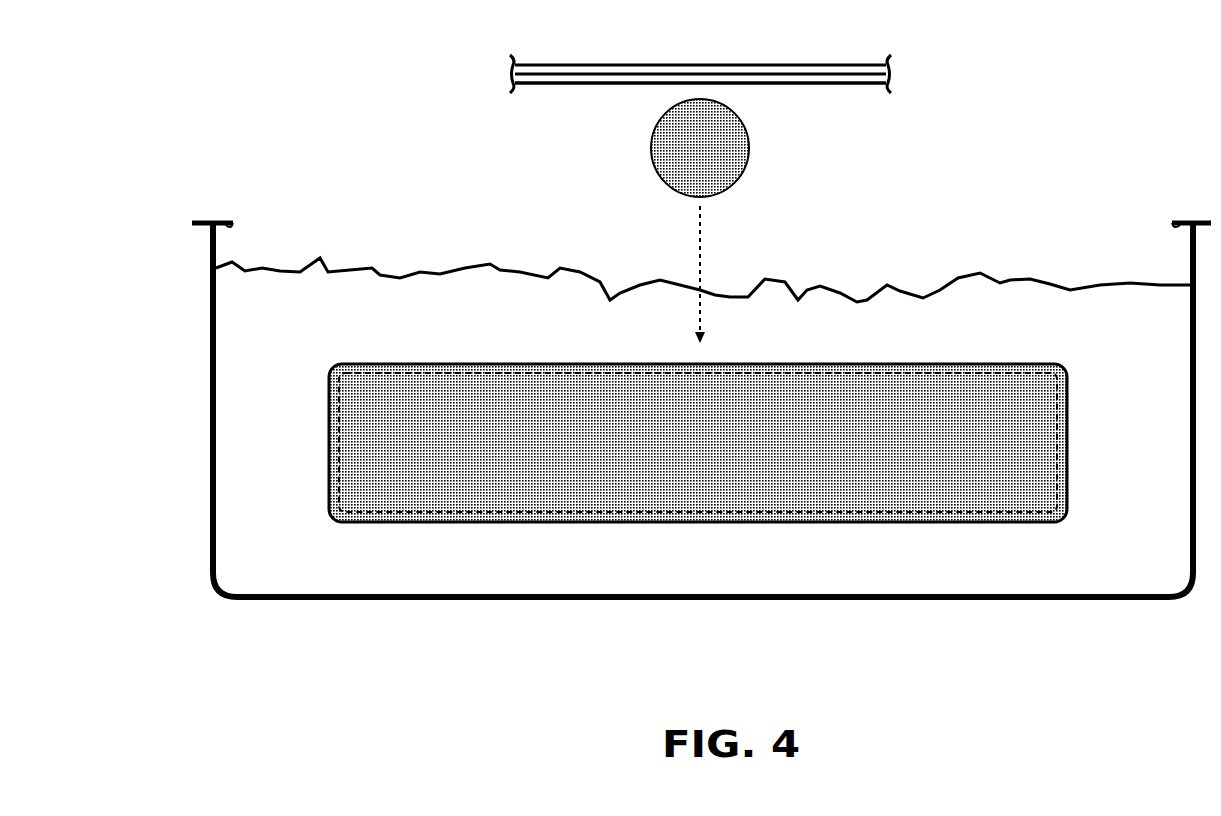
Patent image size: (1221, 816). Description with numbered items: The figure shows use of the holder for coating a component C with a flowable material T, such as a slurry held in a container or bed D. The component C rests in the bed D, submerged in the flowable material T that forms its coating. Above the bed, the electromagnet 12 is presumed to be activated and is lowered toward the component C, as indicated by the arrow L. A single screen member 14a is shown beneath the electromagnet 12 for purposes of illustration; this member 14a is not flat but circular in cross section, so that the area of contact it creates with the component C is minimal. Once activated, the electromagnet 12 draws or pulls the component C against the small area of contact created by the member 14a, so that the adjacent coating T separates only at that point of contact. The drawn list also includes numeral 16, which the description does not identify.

The electromagnet 12 is at (700, 51).
The crossing member 14a is at (700, 148).
The coating layer 16 is at (812, 95).
The arrow L is at (707, 235).
The component C is at (365, 446).
The flowable material T is at (586, 470).
The container or bed D is at (417, 615).